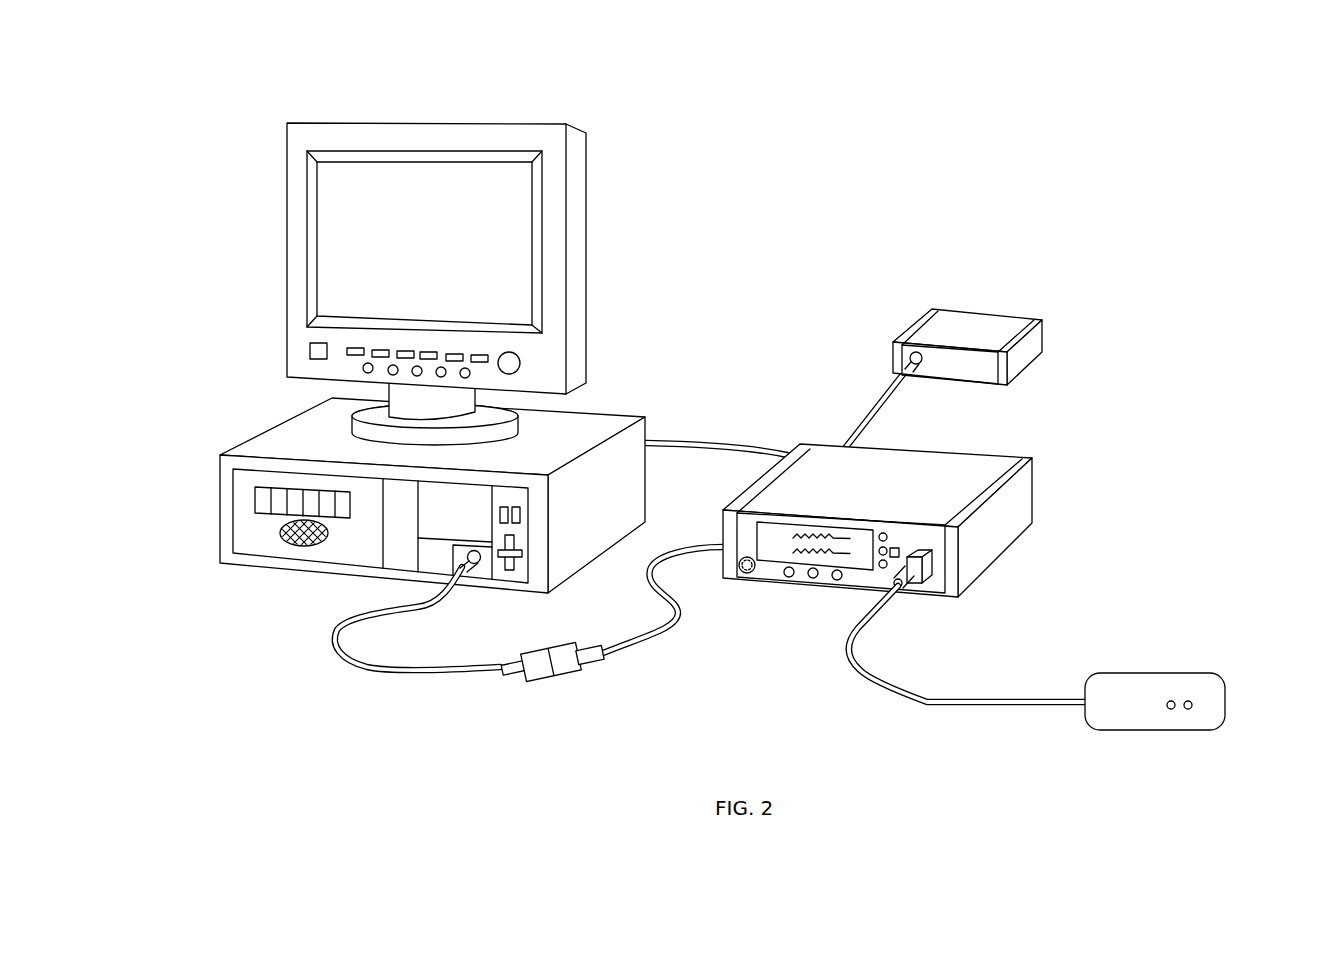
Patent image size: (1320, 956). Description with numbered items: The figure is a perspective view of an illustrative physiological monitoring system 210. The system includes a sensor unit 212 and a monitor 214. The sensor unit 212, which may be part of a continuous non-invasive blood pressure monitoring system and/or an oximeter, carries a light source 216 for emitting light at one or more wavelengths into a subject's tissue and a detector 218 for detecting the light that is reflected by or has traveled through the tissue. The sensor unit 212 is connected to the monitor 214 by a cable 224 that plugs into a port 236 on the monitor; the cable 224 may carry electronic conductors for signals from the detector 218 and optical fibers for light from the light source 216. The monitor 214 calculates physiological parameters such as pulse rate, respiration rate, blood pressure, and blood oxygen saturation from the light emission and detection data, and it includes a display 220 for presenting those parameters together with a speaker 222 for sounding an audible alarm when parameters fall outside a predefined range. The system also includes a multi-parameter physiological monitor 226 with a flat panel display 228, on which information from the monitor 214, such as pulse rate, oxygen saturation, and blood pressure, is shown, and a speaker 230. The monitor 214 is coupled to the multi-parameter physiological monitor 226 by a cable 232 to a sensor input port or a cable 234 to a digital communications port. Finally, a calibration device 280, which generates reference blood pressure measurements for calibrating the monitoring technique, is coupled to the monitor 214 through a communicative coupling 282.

The physiological monitoring system 210 is at (1073, 92).
The sensor unit 212 is at (1184, 692).
The monitor 214 is at (866, 530).
The light source 216 is at (1171, 712).
The detector 218 is at (1190, 712).
The display 220 is at (780, 558).
The speaker 222 is at (743, 578).
The cable 224 is at (863, 675).
The multi-parameter physiological monitor 226 is at (440, 372).
The display 228 is at (337, 262).
The speaker 230 is at (308, 546).
The cable 232 is at (638, 647).
The cable 234 is at (695, 437).
The port 236 is at (927, 590).
The calibration device 280 is at (992, 313).
The communicative coupling 282 is at (873, 407).